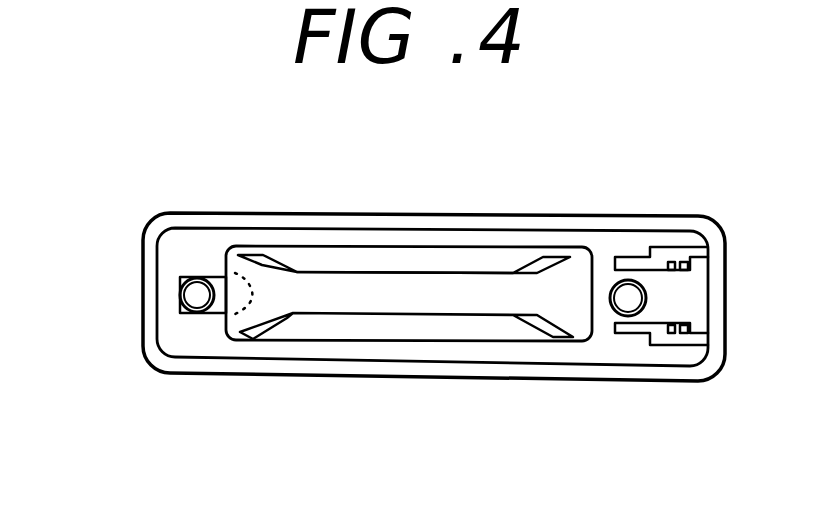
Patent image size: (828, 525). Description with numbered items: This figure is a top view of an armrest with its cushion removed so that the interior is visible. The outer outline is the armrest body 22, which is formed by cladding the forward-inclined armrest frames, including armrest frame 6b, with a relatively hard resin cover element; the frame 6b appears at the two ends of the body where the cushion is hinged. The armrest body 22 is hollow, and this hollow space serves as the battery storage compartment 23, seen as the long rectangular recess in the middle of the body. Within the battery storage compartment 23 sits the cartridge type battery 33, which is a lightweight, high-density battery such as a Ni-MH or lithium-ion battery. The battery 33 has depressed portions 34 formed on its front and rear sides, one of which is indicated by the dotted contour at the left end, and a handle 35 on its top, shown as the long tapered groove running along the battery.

The armrest body 22 is at (215, 212).
The battery storage compartment 23 is at (388, 352).
The cartridge type battery 33 is at (465, 332).
The depressed portion 34 is at (260, 353).
The handle 35 is at (395, 290).
The armrest frame 6b is at (187, 295).